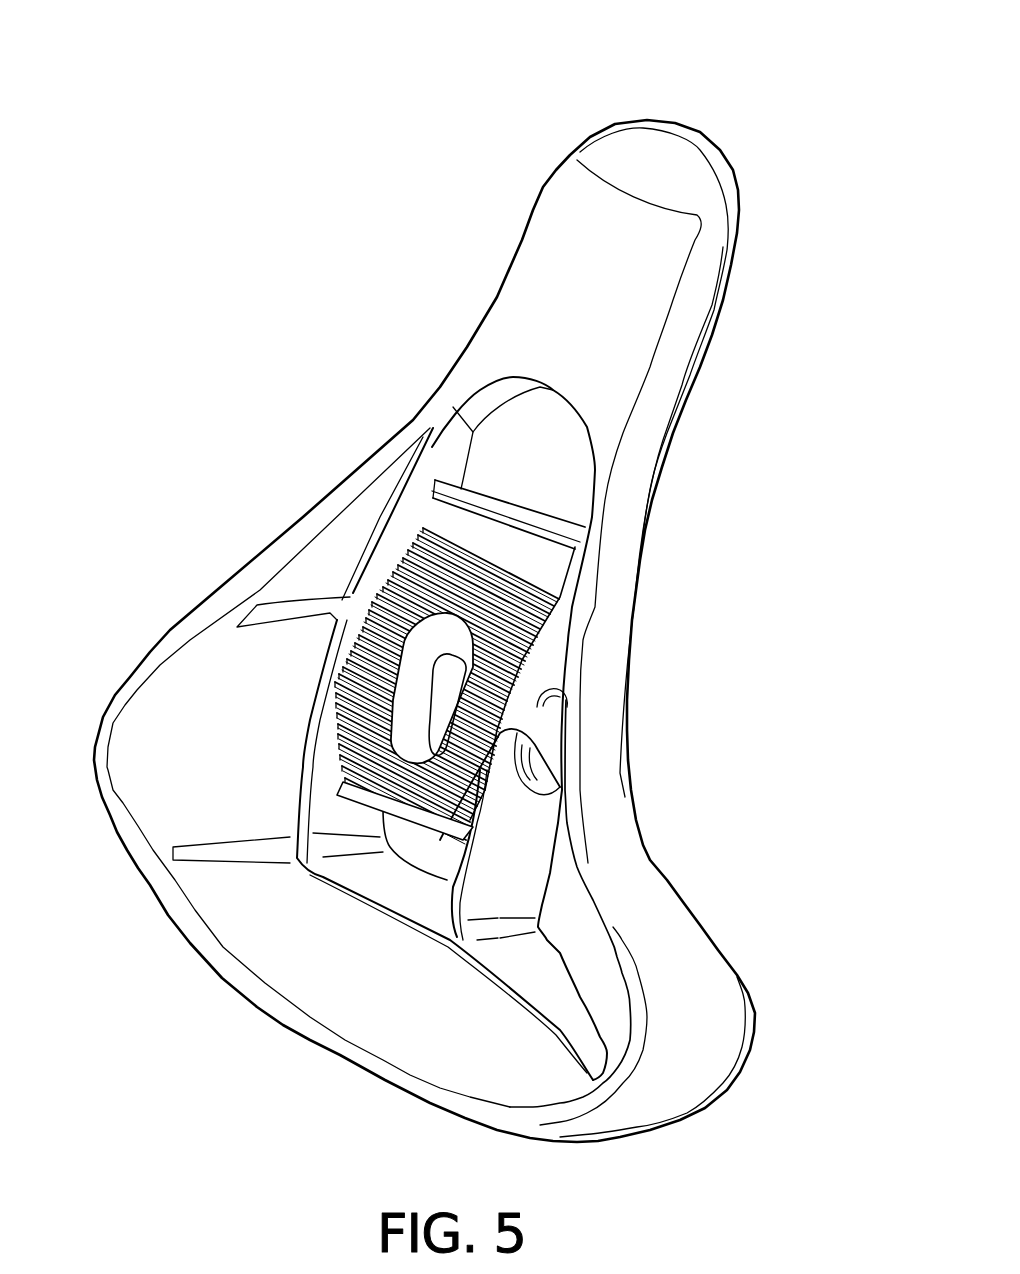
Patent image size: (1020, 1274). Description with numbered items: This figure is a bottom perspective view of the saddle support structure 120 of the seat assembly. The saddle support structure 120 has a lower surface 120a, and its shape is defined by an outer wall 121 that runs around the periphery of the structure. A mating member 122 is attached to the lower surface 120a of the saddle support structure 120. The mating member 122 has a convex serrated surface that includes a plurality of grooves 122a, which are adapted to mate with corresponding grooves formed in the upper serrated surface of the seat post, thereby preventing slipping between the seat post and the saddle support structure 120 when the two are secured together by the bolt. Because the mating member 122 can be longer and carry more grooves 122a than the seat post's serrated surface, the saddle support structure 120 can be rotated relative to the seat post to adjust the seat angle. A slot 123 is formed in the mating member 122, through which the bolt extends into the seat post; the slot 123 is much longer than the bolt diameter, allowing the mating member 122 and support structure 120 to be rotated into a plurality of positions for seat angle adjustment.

The saddle support structure 120 is at (755, 95).
The lower surface 120a is at (385, 973).
The outer wall 121 is at (710, 967).
The mating member 122 is at (503, 550).
The grooves 122a is at (508, 636).
The slot 123 is at (426, 687).